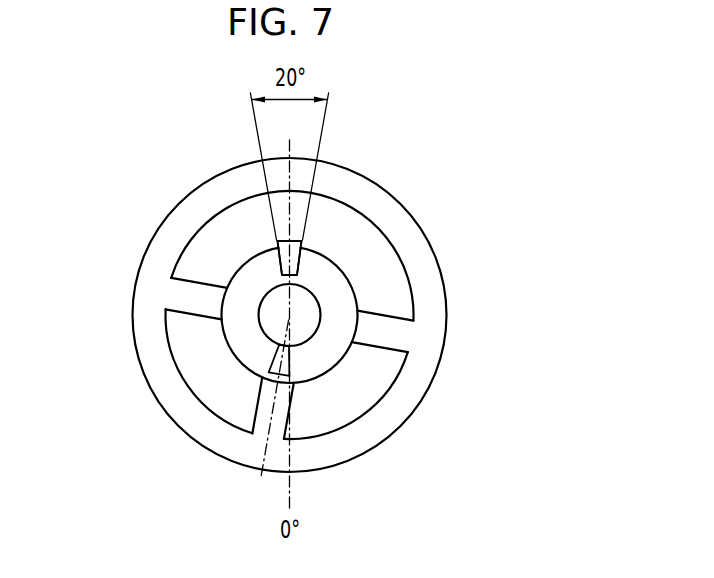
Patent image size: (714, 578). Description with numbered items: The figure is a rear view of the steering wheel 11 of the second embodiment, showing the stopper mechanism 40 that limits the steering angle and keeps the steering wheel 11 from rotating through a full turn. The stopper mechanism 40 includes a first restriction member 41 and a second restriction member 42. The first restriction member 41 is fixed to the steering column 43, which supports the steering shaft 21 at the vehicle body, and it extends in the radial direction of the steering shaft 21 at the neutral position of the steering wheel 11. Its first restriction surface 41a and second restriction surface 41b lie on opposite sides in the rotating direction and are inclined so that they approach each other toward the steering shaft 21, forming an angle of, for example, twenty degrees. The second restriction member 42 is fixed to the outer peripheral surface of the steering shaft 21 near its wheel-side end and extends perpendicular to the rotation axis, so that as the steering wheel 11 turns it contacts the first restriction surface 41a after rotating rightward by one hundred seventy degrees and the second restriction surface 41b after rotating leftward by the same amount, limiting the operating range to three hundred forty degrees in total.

The steering wheel 11 is at (447, 283).
The steering shaft 21 is at (312, 339).
The stopper mechanism 40 is at (181, 136).
The first restriction member 41 is at (279, 240).
The first restriction surface 41a is at (300, 252).
The second restriction surface 41b is at (278, 252).
The second restriction member 42 is at (270, 358).
The steering column 43 is at (226, 347).